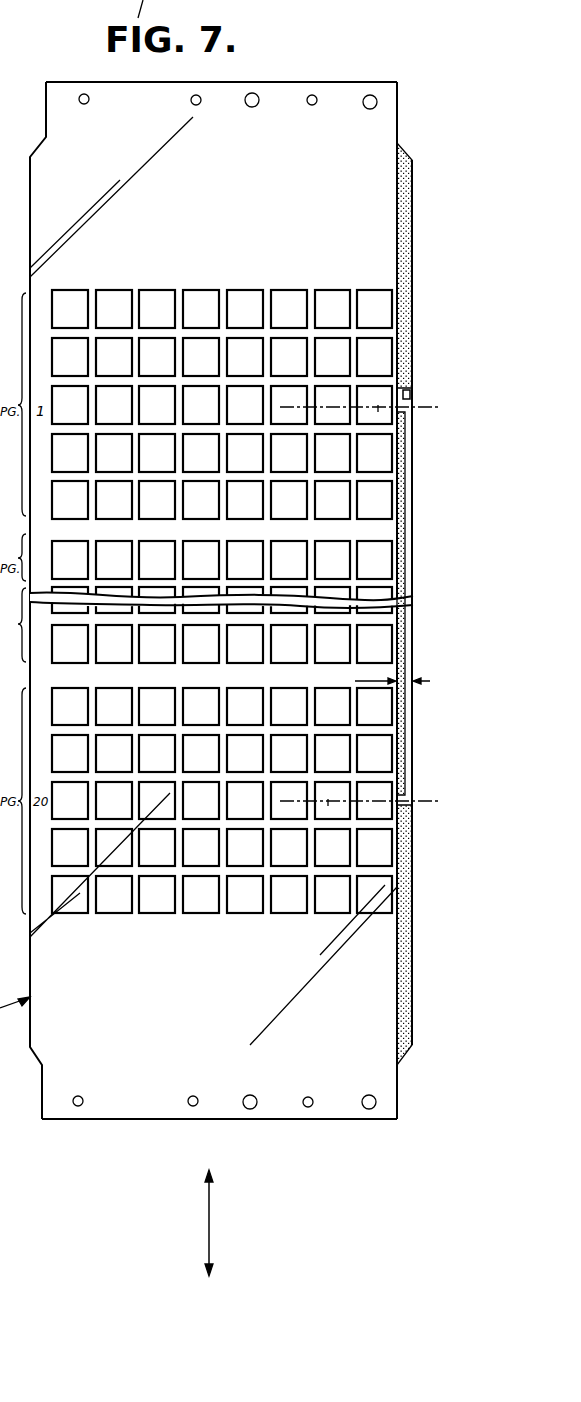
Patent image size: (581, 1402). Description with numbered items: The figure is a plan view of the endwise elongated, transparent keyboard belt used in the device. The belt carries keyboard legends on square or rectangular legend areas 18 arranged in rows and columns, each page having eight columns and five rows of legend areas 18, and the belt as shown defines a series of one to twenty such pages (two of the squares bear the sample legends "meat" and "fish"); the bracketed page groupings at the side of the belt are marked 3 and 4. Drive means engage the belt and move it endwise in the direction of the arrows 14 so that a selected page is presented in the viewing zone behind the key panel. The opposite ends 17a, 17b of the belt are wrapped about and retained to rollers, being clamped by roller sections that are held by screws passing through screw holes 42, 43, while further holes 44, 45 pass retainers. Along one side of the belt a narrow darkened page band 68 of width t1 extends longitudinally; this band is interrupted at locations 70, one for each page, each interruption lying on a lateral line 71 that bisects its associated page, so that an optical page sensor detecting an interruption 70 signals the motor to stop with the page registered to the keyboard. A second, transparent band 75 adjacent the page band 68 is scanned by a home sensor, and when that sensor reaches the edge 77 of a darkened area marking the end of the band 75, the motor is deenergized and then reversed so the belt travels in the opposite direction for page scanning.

The page group 3 is at (13, 404).
The page group 4 is at (7, 270).
The arrows 14 is at (210, 1225).
The belt end 17a is at (146, 118).
The belt end 17b is at (142, 1114).
The legend areas 18 is at (150, 297).
The screw hole 42 is at (255, 94).
The screw hole 43 is at (250, 1109).
The hole 44 is at (84, 94).
The hole 45 is at (78, 1106).
The page band 68 is at (406, 643).
The interruption 70 is at (412, 409).
The lateral line 71 is at (378, 408).
The second band 75 is at (408, 507).
The edge 77 is at (412, 393).
The width t1 is at (405, 686).